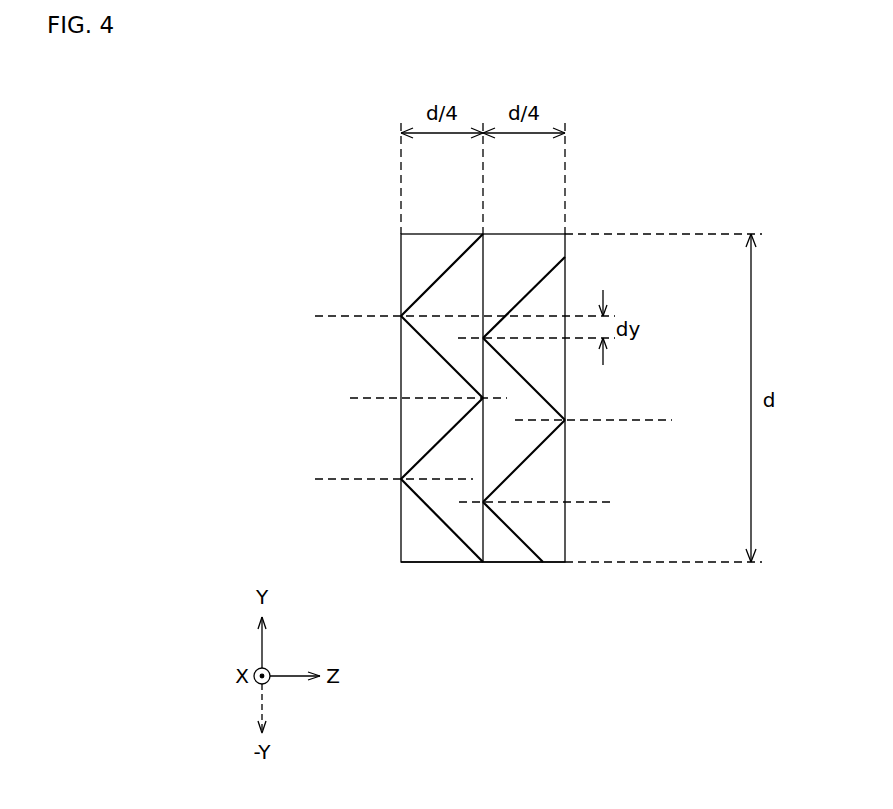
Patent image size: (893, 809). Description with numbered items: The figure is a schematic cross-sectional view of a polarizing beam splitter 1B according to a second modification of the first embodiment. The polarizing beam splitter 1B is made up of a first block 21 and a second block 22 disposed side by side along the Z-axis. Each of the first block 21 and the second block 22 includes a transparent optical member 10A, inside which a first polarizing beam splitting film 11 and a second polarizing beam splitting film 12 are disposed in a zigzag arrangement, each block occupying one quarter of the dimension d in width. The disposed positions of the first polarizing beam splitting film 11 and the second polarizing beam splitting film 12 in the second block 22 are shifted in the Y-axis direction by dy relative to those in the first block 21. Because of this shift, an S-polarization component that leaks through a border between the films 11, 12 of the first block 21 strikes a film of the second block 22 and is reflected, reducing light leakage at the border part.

The polarizing beam splitter 1B is at (343, 197).
The first polarizing beam splitting film 11 is at (430, 283).
The second polarizing beam splitting film 12 is at (430, 345).
The transparent optical member 10A is at (442, 563).
The first block 21 is at (400, 662).
The second block 22 is at (485, 662).